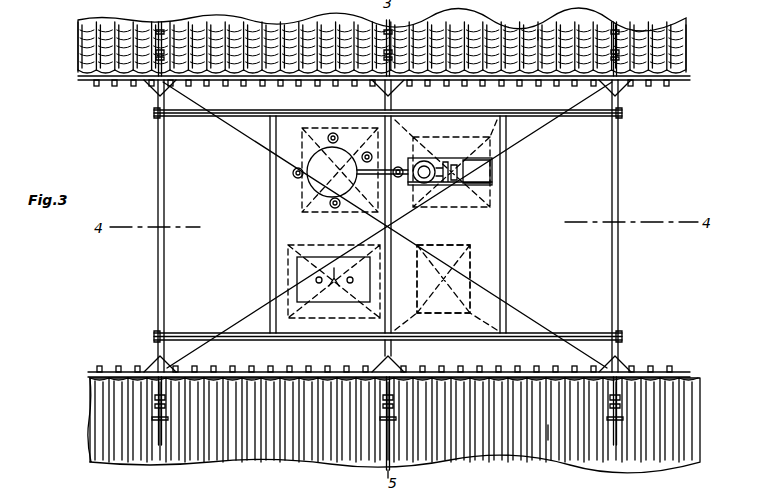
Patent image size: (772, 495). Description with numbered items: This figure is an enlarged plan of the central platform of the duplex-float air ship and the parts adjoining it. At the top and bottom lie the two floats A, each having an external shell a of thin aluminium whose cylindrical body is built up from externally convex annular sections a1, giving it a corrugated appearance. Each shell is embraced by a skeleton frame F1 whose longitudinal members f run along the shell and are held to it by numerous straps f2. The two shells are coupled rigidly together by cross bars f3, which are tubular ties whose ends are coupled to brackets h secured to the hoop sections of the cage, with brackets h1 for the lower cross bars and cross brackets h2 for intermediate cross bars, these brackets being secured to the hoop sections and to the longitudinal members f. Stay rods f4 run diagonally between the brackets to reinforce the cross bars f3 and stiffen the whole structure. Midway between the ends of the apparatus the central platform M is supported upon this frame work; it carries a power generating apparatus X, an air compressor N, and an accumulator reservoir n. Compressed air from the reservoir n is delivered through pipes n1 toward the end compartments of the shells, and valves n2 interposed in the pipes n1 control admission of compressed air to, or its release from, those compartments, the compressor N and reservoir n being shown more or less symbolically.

The aerostat or float A is at (372, 240).
The external shell or casing a is at (690, 47).
The annular section a1 is at (541, 227).
The longitudinal member f is at (106, 82).
The strap f2 is at (142, 85).
The cross bar or tie f3 is at (388, 226).
The stay rod f4 is at (402, 225).
The bracket h is at (166, 32).
The bracket for lower cross bars h1 is at (393, 98).
The cross bracket h2 is at (176, 88).
The skeleton frame F1 is at (543, 350).
The accumulator reservoir n is at (357, 172).
The pipe n1 is at (380, 353).
The valve n2 is at (330, 135).
The air compressor N is at (462, 160).
The central platform M is at (443, 279).
The power generating apparatus X is at (333, 280).